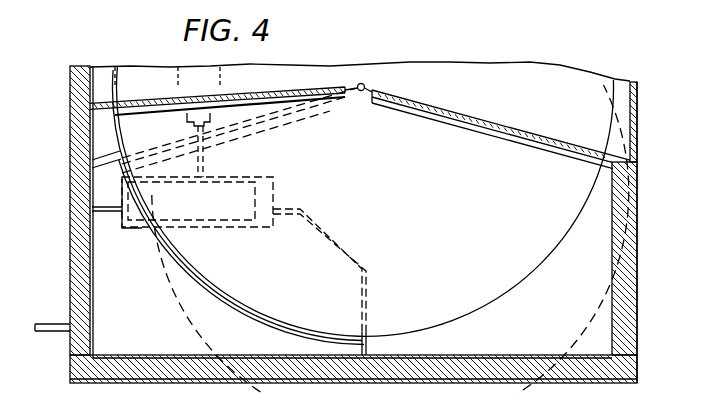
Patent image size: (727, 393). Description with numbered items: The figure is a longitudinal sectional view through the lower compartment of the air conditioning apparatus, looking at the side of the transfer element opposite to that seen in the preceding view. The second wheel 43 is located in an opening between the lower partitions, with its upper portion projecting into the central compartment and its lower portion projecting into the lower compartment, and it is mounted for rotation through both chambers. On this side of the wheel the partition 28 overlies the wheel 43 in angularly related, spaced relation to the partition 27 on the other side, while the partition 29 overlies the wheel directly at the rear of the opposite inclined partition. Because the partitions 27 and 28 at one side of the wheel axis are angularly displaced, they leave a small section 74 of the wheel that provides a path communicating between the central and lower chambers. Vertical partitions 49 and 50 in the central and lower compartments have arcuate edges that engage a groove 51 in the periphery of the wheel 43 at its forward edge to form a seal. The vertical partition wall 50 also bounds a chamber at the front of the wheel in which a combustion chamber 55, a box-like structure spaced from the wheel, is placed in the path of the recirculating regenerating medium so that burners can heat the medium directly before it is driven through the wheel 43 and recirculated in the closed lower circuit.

The lower partition 27 is at (297, 122).
The partition 28 is at (293, 88).
The partition 29 is at (448, 109).
The second wheel 43 is at (499, 287).
The vertical partition 49 is at (620, 122).
The vertical partition wall 50 is at (600, 226).
The groove 51 is at (546, 257).
The combustion chamber 55 is at (110, 274).
The small section 74 is at (140, 136).